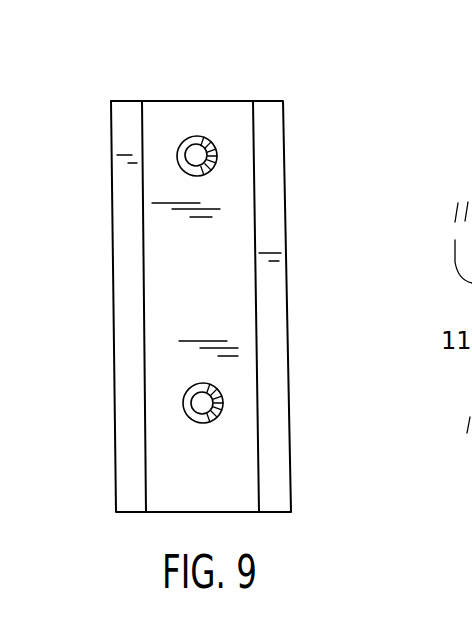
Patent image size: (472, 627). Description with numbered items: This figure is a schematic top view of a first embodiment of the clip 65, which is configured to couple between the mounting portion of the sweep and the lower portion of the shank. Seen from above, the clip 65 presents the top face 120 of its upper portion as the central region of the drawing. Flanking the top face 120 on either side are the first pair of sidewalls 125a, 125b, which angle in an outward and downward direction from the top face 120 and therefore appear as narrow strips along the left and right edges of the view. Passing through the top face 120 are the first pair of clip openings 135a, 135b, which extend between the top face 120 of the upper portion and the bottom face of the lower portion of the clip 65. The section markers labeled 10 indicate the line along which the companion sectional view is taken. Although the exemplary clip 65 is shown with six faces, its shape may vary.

The clip 65 is at (352, 212).
The top face 120 is at (225, 485).
The first sidewall of first pair 125a is at (123, 128).
The second sidewall of first pair 125b is at (264, 158).
The first clip opening 135a is at (207, 137).
The second clip opening 135b is at (218, 388).
The section line indicator 10 is at (72, 217).